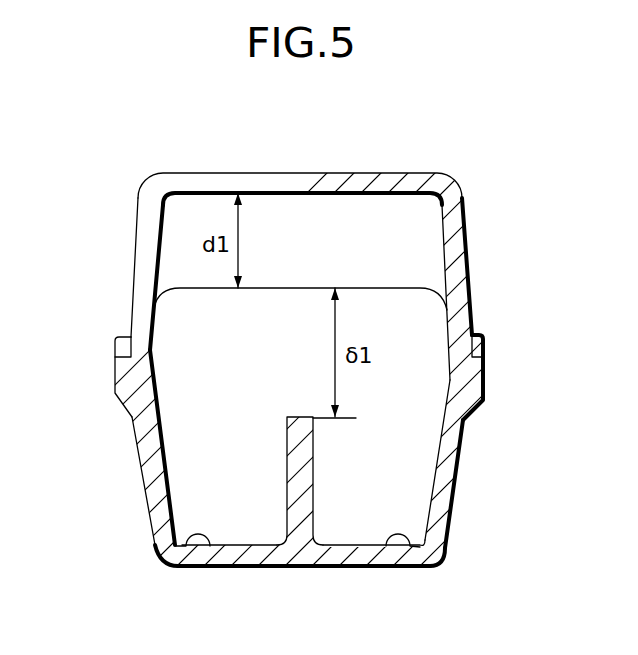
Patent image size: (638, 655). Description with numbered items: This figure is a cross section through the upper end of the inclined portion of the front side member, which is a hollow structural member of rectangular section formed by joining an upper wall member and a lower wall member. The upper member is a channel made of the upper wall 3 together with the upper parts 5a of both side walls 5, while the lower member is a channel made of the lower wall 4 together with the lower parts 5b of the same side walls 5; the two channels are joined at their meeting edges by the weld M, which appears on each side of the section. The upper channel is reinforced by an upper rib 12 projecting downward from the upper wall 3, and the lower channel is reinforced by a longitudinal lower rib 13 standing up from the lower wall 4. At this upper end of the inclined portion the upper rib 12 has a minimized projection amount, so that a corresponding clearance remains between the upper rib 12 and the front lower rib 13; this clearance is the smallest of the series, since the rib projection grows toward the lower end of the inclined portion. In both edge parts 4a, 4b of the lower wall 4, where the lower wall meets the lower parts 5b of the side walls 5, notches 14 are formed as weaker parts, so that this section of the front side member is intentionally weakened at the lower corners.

The upper wall 3 is at (262, 172).
The upper rib 12 is at (365, 232).
The longitudinal lower rib 13 is at (287, 465).
The notch 14 is at (208, 544).
The lower wall 4 is at (310, 568).
The edge part of the lower wall 4a is at (163, 568).
The edge part of the lower wall 4b is at (430, 568).
The side wall 5 is at (297, 373).
The upper part of the side wall 5a is at (132, 263).
The lower part of the side wall 5b is at (143, 490).
The weld M is at (115, 348).